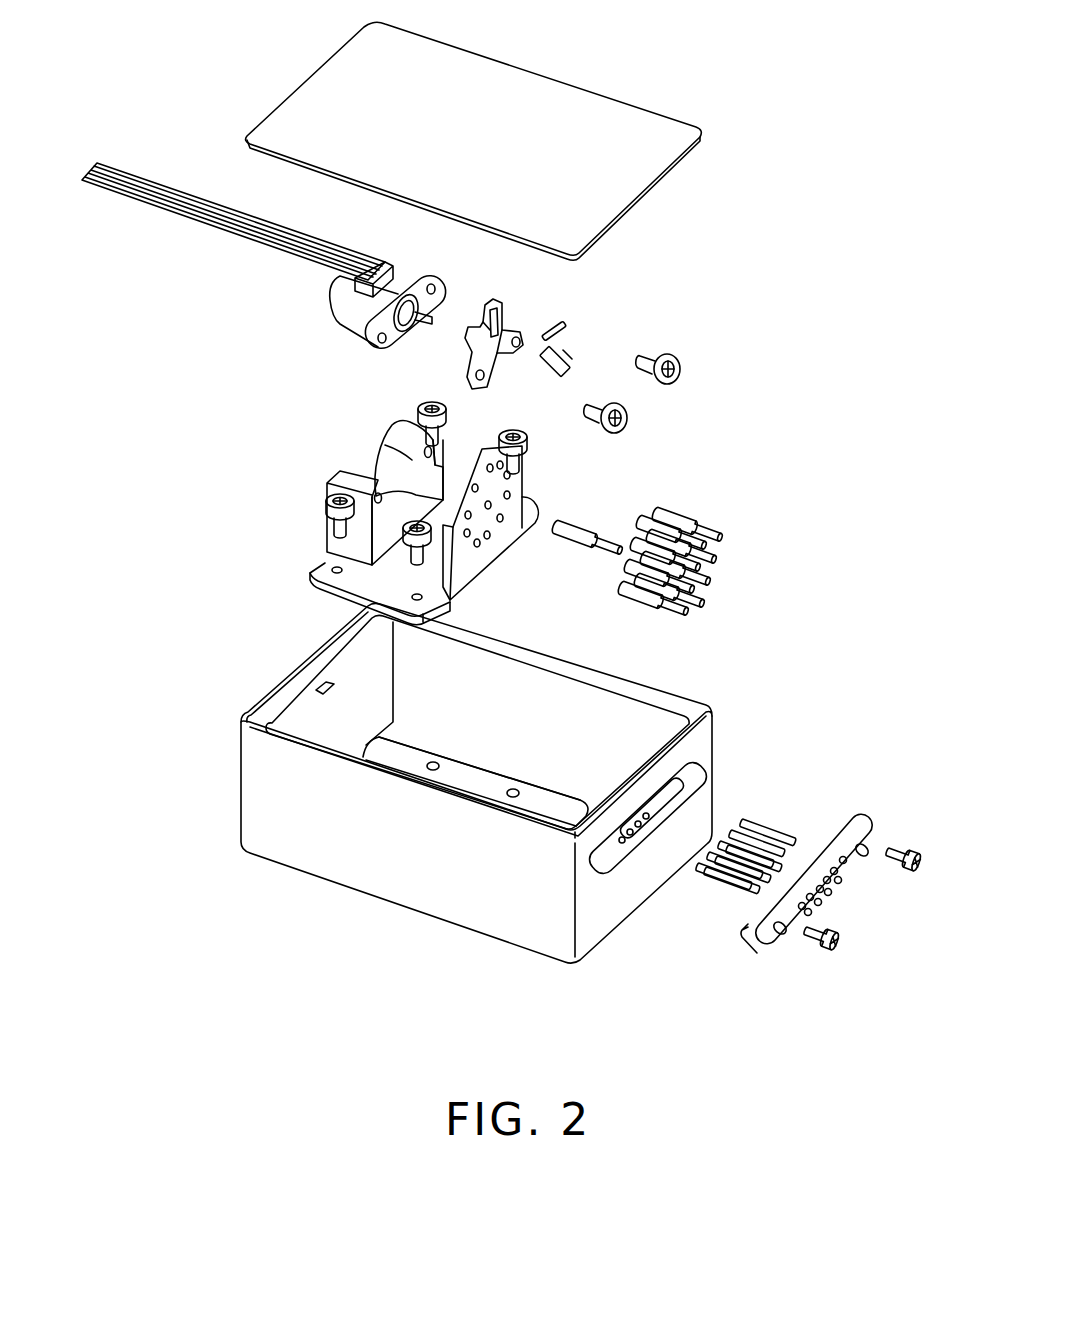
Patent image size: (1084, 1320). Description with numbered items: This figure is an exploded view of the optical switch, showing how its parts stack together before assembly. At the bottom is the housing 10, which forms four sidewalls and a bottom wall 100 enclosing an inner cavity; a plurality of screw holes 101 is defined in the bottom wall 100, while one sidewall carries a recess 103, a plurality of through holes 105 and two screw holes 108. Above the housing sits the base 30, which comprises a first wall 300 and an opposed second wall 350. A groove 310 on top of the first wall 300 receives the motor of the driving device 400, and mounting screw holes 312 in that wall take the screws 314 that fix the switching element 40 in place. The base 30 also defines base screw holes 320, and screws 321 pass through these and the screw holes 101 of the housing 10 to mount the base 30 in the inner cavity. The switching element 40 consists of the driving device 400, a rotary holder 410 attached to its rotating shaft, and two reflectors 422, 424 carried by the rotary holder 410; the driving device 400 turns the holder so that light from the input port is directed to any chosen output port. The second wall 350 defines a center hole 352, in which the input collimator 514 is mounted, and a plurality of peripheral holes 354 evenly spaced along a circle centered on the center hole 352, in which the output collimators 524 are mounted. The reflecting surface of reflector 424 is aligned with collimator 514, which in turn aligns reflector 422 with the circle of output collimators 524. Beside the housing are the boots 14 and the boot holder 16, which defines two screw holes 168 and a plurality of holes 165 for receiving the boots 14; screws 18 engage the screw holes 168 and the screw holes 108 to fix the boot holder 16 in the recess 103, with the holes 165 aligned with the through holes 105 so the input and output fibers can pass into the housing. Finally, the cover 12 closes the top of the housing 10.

The housing 10 is at (259, 797).
The bottom wall 100 is at (396, 757).
The screw holes 101 is at (511, 797).
The recess 103 is at (605, 887).
The through holes 105 is at (630, 838).
The screw holes 108 is at (676, 788).
The cover 12 is at (600, 128).
The boots 14 is at (723, 889).
The boot holder 16 is at (837, 914).
The holes 165 is at (846, 882).
The screw holes 168 is at (865, 842).
The screws 18 is at (898, 853).
The base 30 is at (428, 514).
The first wall 300 is at (347, 487).
The groove 310 is at (390, 457).
The mounting screw holes 312 is at (432, 452).
The base screw holes 320 is at (334, 573).
The screws 321 is at (325, 512).
The second wall 350 is at (517, 478).
The center hole 352 is at (487, 505).
The peripheral holes 354 is at (478, 548).
The switching element 40 is at (592, 323).
The driving device 400 is at (338, 298).
The rotary holder 410 is at (470, 340).
The reflector 422 is at (567, 325).
The reflector 424 is at (568, 377).
The collimator 514 is at (584, 552).
The collimators 524 is at (687, 522).
The screws 314 is at (625, 405).